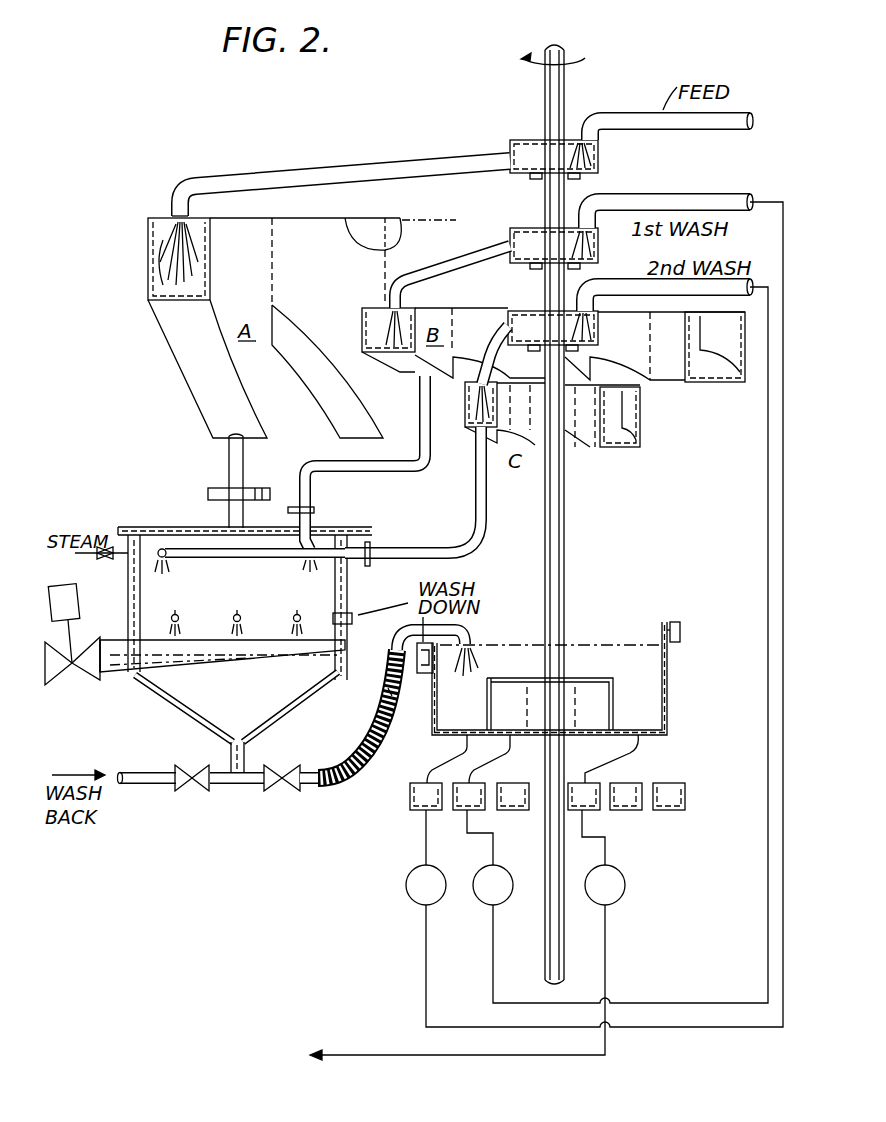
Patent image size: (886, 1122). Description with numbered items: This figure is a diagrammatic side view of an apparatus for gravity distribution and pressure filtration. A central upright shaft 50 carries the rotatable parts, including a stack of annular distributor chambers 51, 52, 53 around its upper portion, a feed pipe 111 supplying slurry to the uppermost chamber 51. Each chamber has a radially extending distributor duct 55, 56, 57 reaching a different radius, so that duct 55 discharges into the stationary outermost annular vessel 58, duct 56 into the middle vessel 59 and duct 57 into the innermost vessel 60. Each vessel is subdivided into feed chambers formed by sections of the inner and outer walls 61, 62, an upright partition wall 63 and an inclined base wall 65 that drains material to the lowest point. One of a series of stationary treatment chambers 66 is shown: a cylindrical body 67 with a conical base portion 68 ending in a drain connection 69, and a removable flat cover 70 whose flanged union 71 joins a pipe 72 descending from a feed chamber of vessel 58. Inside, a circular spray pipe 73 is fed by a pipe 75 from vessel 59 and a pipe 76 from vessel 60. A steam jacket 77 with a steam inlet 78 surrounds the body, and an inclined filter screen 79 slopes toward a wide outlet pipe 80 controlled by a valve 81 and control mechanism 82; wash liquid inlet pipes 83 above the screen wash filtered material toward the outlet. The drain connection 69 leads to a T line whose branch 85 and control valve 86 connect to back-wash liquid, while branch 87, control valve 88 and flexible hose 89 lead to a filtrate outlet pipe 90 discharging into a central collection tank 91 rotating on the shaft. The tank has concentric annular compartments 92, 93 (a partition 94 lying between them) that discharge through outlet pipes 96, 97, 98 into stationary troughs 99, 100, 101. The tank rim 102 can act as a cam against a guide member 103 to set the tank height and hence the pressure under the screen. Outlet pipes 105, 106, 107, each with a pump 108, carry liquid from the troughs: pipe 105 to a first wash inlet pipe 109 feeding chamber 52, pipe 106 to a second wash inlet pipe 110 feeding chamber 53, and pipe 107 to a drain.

The central upright shaft 50 is at (560, 546).
The uppermost distributor chamber 51 is at (600, 157).
The middle distributor chamber 52 is at (600, 246).
The lowermost distributor chamber 53 is at (600, 331).
The distributor duct 55 is at (290, 168).
The distributor duct 56 is at (448, 267).
The distributor duct 57 is at (496, 325).
The outermost annular vessel 58 is at (143, 250).
The middle annular vessel 59 is at (362, 327).
The innermost annular vessel 60 is at (468, 402).
The inner wall 61 is at (255, 266).
The outer wall 62 is at (176, 214).
The upright partition wall 63 is at (372, 238).
The inclined base wall 65 is at (192, 355).
The treatment chamber 66 is at (150, 526).
The cylindrical body 67 is at (130, 580).
The conical base portion 68 is at (197, 712).
The drain connection 69 is at (246, 750).
The removable flat cover 70 is at (340, 535).
The flanged union 71 is at (235, 512).
The pipe 72 is at (233, 453).
The circular spray pipe 73 is at (215, 553).
The pipe 75 is at (388, 467).
The pipe 76 is at (490, 503).
The steam jacket 77 is at (350, 593).
The steam inlet 78 is at (88, 553).
The inclined filter screen 79 is at (262, 655).
The wide outlet pipe 80 is at (116, 660).
The valve 81 is at (62, 665).
The control mechanism 82 is at (70, 604).
The wash liquid inlet pipes 83 is at (300, 612).
The branch 85 is at (143, 787).
The control valve 86 is at (186, 790).
The branch 87 is at (308, 788).
The control valve 88 is at (286, 790).
The flexible hose 89 is at (363, 762).
The filtrate outlet pipe 90 is at (460, 630).
The central collection tank 91 is at (668, 675).
The annular compartment 92 is at (551, 683).
The annular compartment 93 is at (523, 719).
The partition 94 is at (528, 688).
The outlet pipe 96 is at (640, 752).
The outlet pipe 97 is at (440, 768).
The outlet pipe 98 is at (484, 770).
The outermost annular trough 99 is at (677, 812).
The middle annular trough 100 is at (625, 812).
The innermost annular trough 101 is at (576, 812).
The rim 102 is at (682, 630).
The guide member 103 is at (390, 707).
The outlet pipe 105 is at (425, 975).
The outlet pipe 106 is at (492, 991).
The outlet pipe 107 is at (606, 966).
The pump 108 is at (473, 898).
The first wash inlet pipe 109 is at (695, 198).
The second wash inlet pipe 110 is at (648, 290).
The feed pipe 111 is at (620, 110).